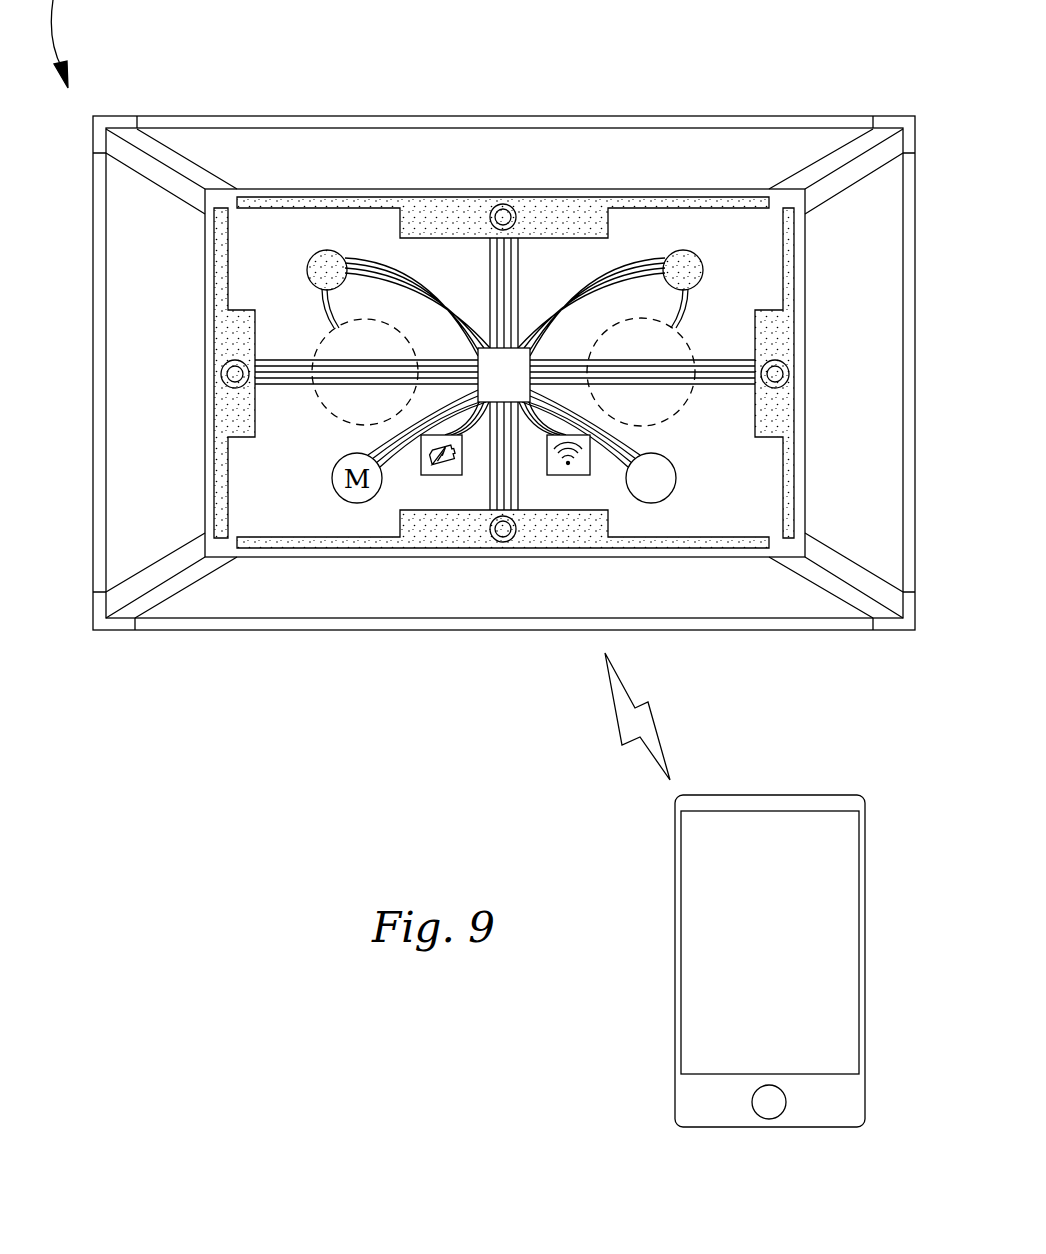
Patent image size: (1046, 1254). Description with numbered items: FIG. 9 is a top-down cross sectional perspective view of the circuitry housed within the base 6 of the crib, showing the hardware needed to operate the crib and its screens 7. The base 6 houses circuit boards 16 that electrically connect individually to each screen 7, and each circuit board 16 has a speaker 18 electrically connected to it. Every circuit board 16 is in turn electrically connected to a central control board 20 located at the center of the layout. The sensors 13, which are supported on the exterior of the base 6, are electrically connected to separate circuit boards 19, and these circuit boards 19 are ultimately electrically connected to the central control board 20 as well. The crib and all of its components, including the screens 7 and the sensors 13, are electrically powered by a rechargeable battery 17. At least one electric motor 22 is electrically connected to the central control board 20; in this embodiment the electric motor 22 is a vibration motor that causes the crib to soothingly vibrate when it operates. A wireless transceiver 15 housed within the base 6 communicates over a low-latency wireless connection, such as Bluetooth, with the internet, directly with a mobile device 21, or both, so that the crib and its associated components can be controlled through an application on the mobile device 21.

The base 6 is at (203, 497).
The screen 7 is at (742, 116).
The sensor 13 is at (333, 425).
The wireless transceiver 15 is at (591, 474).
The circuit board 16 is at (770, 447).
The rechargeable battery 17 is at (421, 470).
The speaker 18 is at (224, 388).
The circuit board 19 is at (703, 271).
The central control board 20 is at (522, 348).
The mobile device 21 is at (675, 1010).
The electric motor 22 is at (669, 496).